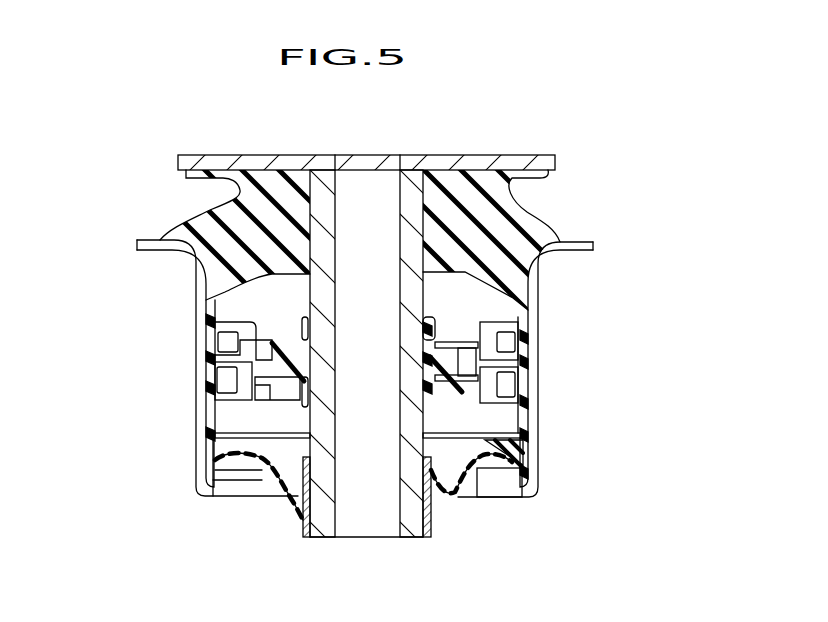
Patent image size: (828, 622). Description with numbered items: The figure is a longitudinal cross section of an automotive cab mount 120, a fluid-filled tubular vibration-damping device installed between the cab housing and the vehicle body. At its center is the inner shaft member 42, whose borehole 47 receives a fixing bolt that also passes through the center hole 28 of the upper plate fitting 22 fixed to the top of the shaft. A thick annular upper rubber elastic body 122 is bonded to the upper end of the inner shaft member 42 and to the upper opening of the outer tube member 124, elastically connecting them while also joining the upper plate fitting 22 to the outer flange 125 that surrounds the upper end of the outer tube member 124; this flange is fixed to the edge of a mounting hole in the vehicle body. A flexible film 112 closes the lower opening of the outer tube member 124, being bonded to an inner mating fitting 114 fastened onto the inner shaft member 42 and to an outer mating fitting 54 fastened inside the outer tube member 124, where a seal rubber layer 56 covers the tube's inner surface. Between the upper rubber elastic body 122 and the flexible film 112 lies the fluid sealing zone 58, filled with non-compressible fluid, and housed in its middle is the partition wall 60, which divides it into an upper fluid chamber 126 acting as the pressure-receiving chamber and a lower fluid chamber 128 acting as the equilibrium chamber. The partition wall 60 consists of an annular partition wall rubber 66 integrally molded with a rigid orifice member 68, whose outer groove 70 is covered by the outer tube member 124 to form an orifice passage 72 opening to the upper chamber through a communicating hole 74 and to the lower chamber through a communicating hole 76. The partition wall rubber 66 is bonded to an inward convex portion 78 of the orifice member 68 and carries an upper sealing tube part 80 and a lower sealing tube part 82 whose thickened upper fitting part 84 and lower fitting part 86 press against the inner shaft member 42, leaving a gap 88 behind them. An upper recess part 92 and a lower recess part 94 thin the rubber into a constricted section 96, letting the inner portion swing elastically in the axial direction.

The automotive cab mount 120 is at (583, 130).
The upper plate fitting 22 is at (195, 163).
The center hole 28 is at (400, 172).
The borehole 47 is at (340, 510).
The upper rubber elastic body 122 is at (270, 215).
The upper fluid chamber 126 is at (223, 286).
The outer flange 125 is at (576, 246).
The outer tube member 124 is at (206, 378).
The communicating hole 74 is at (235, 335).
The upper recess part 92 is at (297, 348).
The orifice member 68 is at (272, 360).
The lower recess part 94 is at (250, 380).
The upper sealing tube part 80 is at (304, 333).
The lower sealing tube part 82 is at (308, 380).
The orifice passage 72 is at (213, 385).
The seal rubber layer 56 is at (212, 421).
The fluid sealing zone 58 is at (262, 462).
The inner shaft member 42 is at (422, 528).
The upper fitting part 84 is at (428, 326).
The gap 88 is at (440, 372).
The inward convex portion 78 is at (436, 364).
The constricted section 96 is at (440, 355).
The groove 70 is at (482, 348).
The partition wall 60 is at (525, 364).
The communicating hole 76 is at (515, 384).
The partition wall rubber 66 is at (467, 392).
The lower fitting part 86 is at (422, 398).
The inner mating fitting 114 is at (435, 480).
The flexible film 112 is at (468, 465).
The lower fluid chamber 128 is at (478, 465).
The outer mating fitting 54 is at (533, 470).